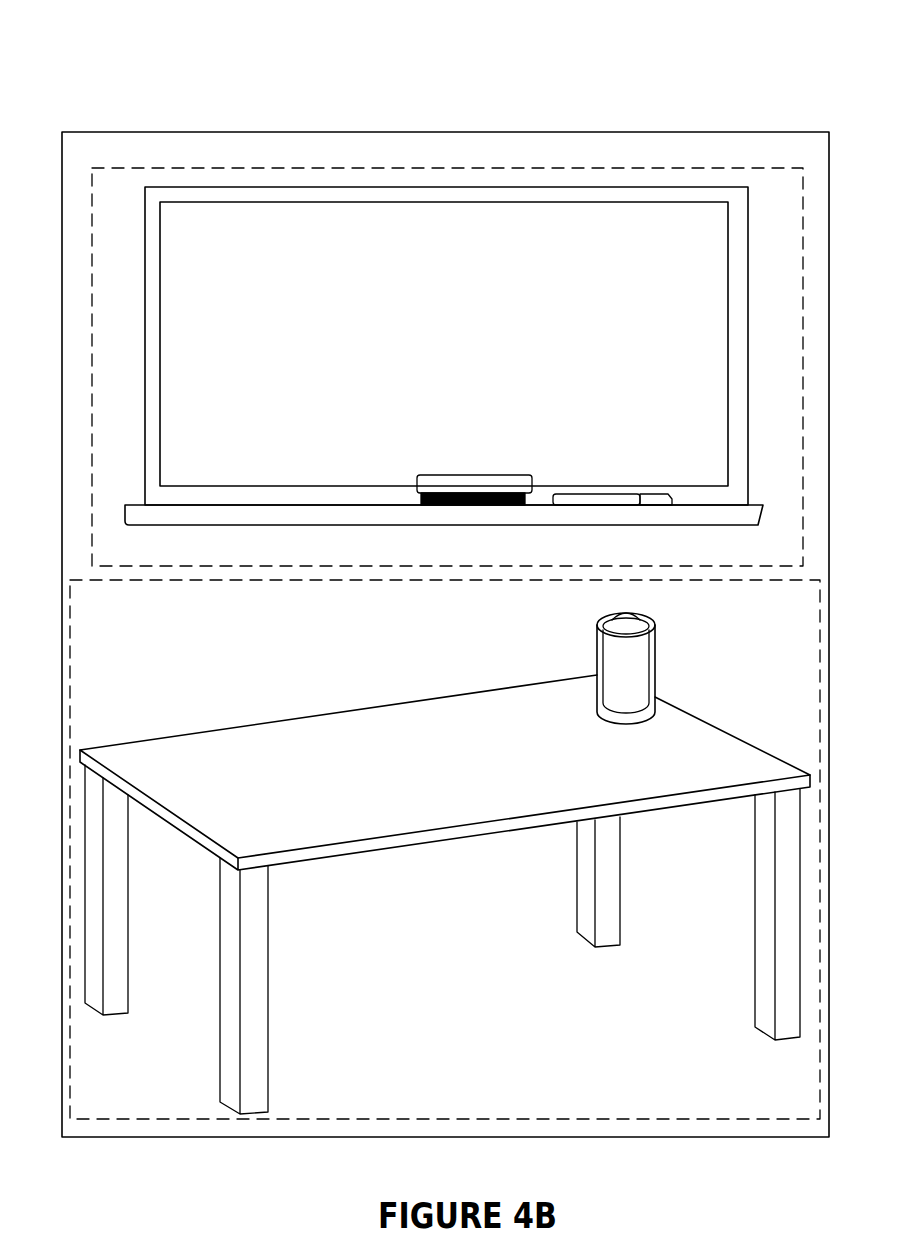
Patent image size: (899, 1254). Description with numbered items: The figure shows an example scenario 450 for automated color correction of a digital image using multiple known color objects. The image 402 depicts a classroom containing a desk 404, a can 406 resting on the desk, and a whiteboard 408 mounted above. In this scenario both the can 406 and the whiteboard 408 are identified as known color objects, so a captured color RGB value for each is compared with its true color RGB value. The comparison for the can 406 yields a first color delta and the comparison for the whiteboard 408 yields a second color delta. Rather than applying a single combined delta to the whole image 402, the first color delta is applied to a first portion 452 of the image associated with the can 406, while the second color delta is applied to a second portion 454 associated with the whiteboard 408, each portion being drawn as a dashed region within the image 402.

The example scenario 450 is at (88, 43).
The image 402 is at (652, 129).
The first portion 452 is at (445, 157).
The second portion 454 is at (155, 1121).
The whiteboard 408 is at (168, 186).
The desk 404 is at (228, 722).
The can 406 is at (590, 645).